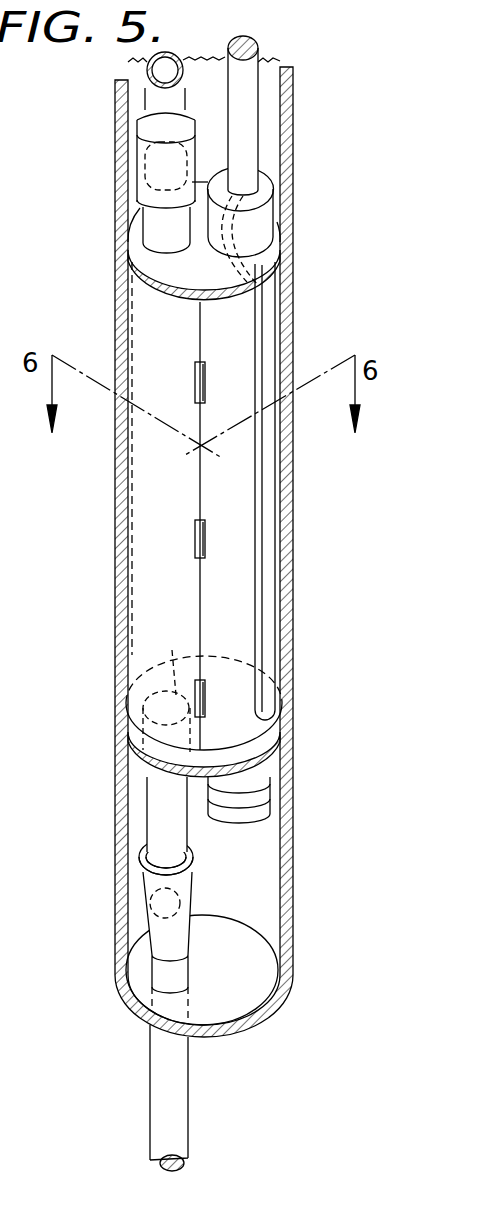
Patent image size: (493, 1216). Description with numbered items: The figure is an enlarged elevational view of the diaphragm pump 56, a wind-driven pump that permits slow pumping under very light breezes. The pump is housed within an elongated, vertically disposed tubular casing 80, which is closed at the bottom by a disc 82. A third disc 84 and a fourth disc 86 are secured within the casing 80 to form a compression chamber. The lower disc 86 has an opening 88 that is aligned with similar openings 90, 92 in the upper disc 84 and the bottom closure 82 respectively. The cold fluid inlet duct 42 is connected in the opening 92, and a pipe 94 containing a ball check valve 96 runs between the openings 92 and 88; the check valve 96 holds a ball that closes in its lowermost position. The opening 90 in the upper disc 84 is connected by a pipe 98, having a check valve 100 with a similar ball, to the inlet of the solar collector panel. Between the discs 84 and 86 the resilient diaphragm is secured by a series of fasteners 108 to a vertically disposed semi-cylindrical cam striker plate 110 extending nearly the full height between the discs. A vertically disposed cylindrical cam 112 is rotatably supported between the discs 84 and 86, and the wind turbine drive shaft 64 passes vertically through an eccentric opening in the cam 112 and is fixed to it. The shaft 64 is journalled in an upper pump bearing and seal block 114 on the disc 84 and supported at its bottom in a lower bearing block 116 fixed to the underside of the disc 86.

The cold fluid inlet duct 42 is at (188, 1098).
The diaphragm pump 56 is at (297, 208).
The wind turbine drive shaft 64 is at (248, 97).
The tubular casing 80 is at (283, 598).
The disc 82 is at (262, 875).
The third disc 84 is at (180, 307).
The fourth disc 86 is at (143, 758).
The opening 88 is at (204, 684).
The opening 90 is at (143, 253).
The opening 92 is at (188, 958).
The pipe 94 is at (147, 813).
The ball check valve 96 is at (142, 888).
The pipe 98 is at (142, 58).
The check valve 100 is at (143, 183).
The fasteners 108 is at (206, 374).
The cam striker plate 110 is at (263, 357).
The cylindrical cam 112 is at (267, 512).
The upper pump bearing and seal block 114 is at (260, 167).
The lower bearing block 116 is at (263, 772).